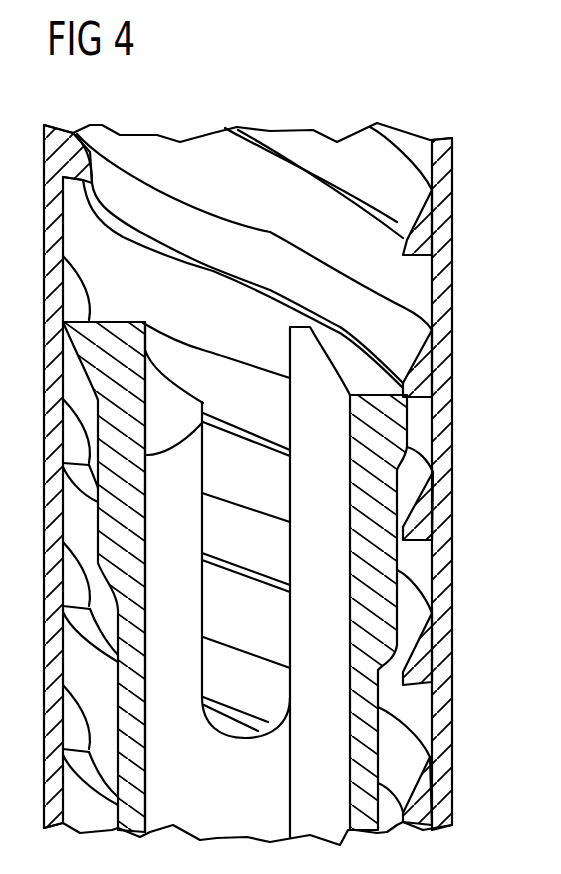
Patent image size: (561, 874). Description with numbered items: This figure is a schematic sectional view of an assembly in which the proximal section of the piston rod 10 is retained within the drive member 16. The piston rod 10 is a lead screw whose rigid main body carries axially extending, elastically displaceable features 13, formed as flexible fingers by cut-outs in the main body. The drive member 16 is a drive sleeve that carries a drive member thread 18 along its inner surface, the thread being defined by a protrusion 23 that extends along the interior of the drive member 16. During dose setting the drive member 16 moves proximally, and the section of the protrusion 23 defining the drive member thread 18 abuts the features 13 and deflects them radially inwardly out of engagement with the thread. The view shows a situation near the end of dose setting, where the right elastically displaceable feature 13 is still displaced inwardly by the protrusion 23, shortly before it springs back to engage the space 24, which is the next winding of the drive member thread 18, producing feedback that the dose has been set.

The piston rod 10 is at (380, 553).
The elastically displaceable features 13 is at (342, 433).
The drive member 16 is at (423, 387).
The drive member thread 18 is at (417, 278).
The protrusion 23 is at (417, 350).
The space 24 is at (422, 426).